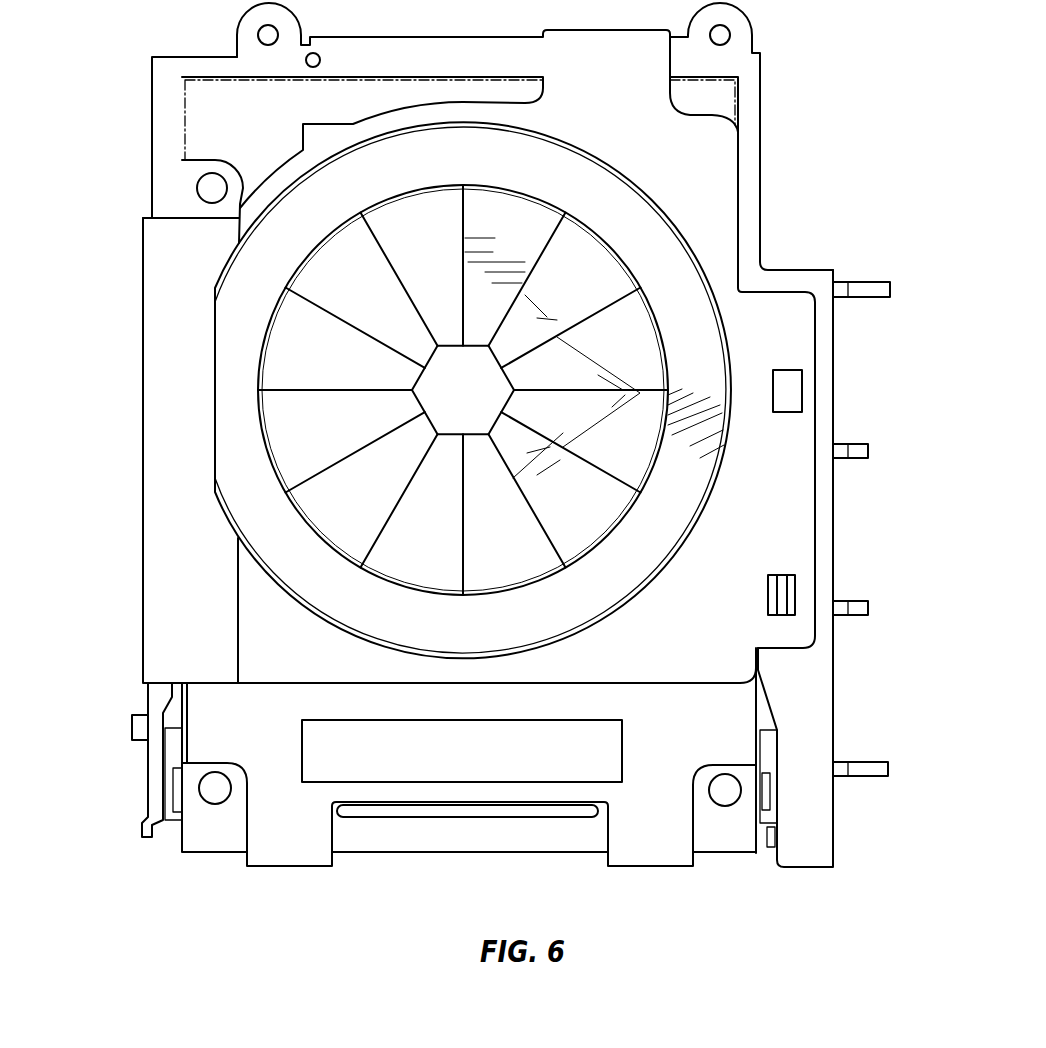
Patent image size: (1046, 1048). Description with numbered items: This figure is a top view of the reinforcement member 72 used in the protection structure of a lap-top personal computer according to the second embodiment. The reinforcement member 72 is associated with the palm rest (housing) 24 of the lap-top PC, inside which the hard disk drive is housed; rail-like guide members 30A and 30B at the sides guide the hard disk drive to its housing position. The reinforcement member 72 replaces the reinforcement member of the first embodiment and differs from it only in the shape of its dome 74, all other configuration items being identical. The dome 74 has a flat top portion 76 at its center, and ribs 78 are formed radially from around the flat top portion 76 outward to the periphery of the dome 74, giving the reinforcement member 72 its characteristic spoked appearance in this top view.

The palm rest (housing) 24 is at (220, 87).
The reinforcement member 72 is at (722, 172).
The dome 74 is at (632, 372).
The flat top portion 76 is at (497, 392).
The ribs 78 is at (368, 387).
The rail-like guide member 30A is at (141, 732).
The rail-like guide member 30B is at (818, 698).